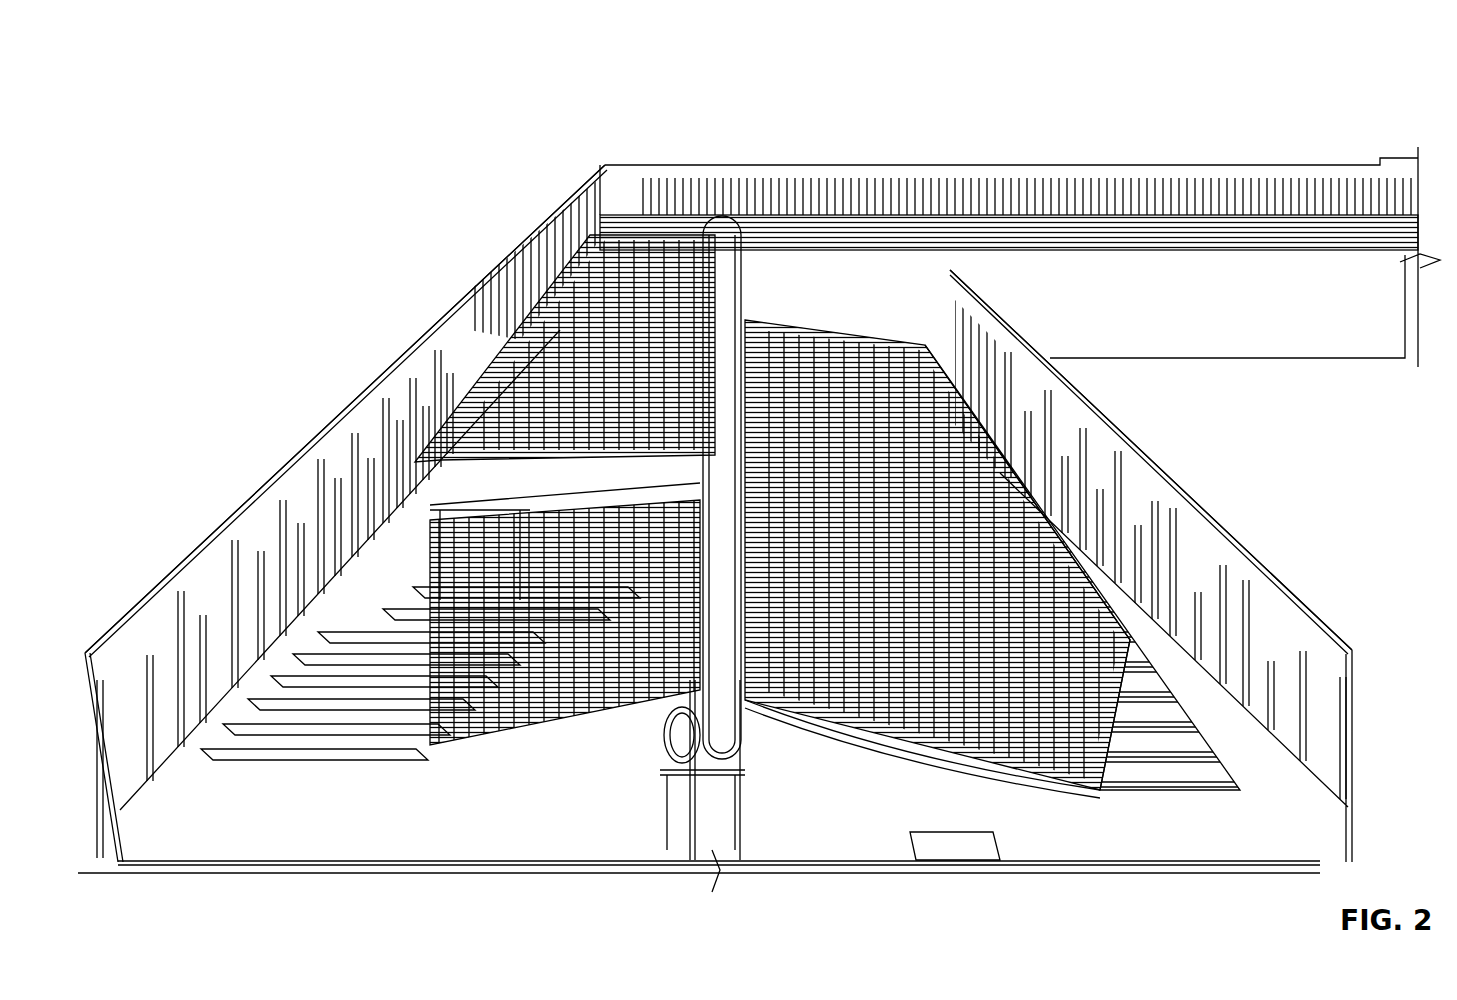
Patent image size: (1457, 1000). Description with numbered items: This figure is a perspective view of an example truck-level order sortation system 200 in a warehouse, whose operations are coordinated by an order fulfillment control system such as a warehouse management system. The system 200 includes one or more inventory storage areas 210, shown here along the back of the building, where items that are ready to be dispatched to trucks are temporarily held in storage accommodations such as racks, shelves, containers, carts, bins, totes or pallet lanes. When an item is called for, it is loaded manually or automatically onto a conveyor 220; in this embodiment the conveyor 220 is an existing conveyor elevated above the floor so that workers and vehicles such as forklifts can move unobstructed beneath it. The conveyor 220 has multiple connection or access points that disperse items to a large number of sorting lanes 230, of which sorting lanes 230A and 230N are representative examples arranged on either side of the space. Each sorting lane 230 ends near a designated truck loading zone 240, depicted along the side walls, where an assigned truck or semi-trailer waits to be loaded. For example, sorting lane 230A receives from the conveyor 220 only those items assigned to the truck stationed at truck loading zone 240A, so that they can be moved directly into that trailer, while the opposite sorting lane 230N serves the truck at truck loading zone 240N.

The truck-level order sortation system 200 is at (238, 58).
The inventory storage area 210 is at (1178, 190).
The conveyor 220 is at (718, 235).
The sorting lane 230 is at (482, 312).
The sorting lane 230A is at (355, 770).
The sorting lane 230N is at (1050, 780).
The truck loading zone 240 is at (357, 492).
The truck loading zone 240A is at (170, 775).
The truck loading zone 240N is at (1262, 775).